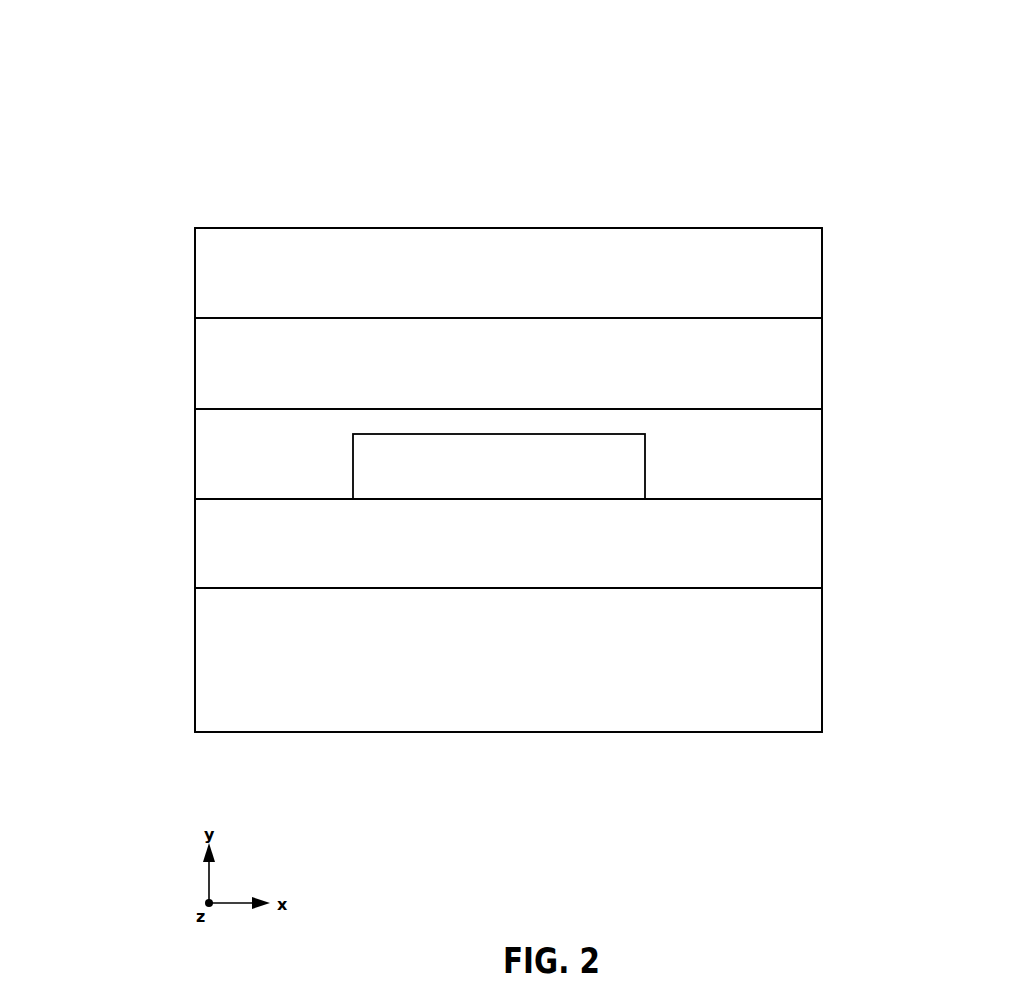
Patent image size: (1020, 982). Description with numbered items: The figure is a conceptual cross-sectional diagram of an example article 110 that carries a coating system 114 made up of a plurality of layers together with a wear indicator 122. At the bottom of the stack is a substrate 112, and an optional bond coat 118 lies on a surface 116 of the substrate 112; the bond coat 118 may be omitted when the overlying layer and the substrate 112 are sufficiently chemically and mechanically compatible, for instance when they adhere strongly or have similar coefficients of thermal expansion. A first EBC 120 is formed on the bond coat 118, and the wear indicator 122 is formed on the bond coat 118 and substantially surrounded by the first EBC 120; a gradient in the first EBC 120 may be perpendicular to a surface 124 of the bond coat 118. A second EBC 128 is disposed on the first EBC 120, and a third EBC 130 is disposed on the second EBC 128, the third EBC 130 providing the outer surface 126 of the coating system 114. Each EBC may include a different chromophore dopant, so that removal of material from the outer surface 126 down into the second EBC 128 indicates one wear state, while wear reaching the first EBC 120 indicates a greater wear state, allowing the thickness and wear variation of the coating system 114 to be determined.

The article 110 is at (137, 72).
The substrate 112 is at (218, 675).
The coating system 114 is at (93, 225).
The surface of substrate 116 is at (805, 588).
The bond coat 118 is at (222, 545).
The first EBC 120 is at (222, 455).
The wear indicator 122 is at (645, 470).
The surface of bond coat 124 is at (797, 497).
The outer surface 126 is at (660, 228).
The second EBC 128 is at (218, 365).
The third EBC 130 is at (213, 264).